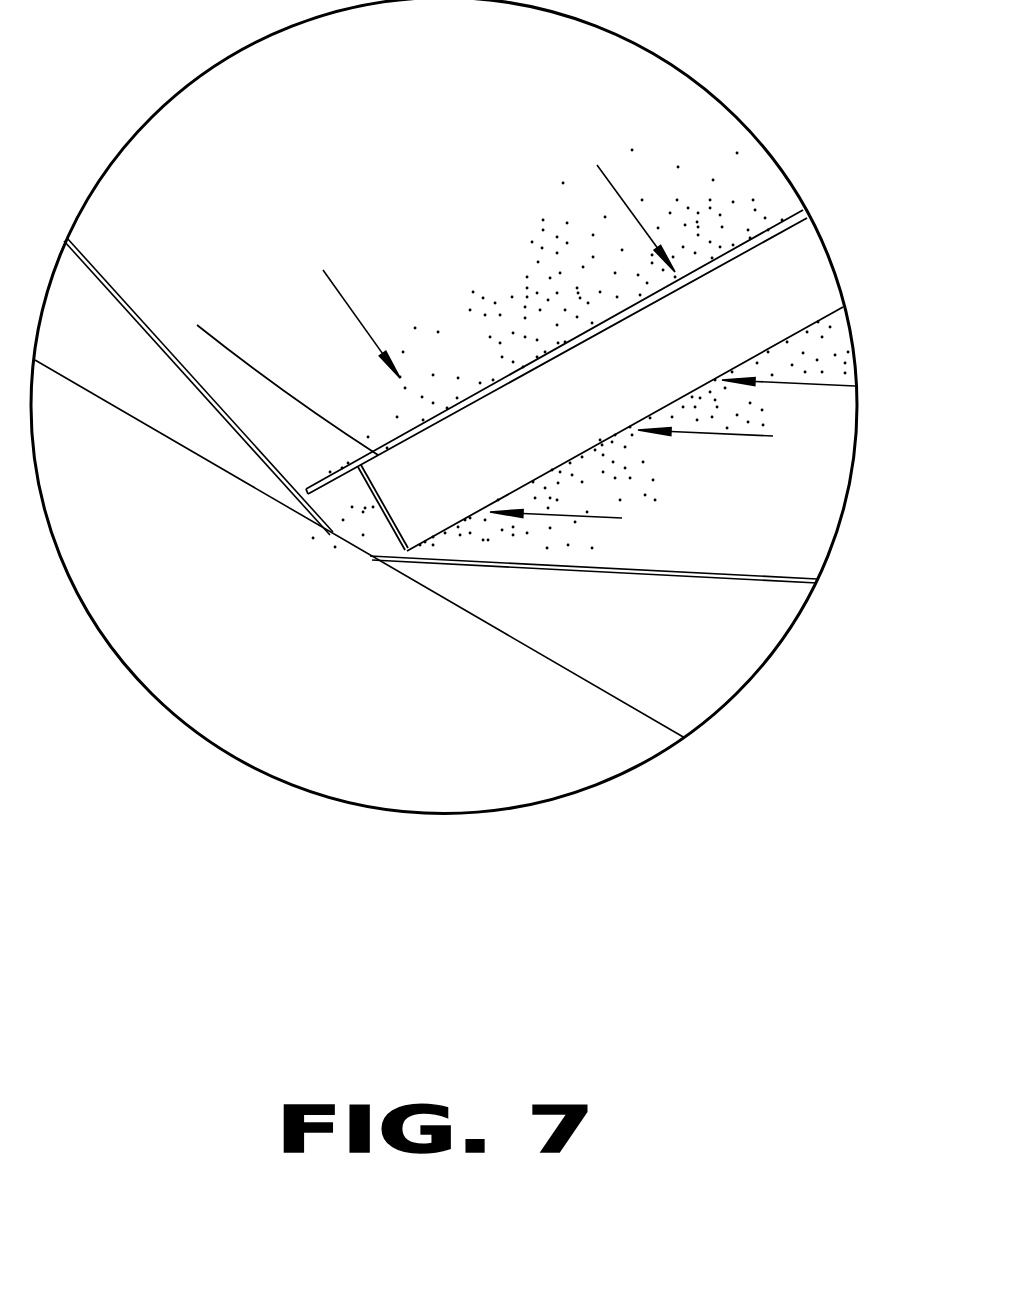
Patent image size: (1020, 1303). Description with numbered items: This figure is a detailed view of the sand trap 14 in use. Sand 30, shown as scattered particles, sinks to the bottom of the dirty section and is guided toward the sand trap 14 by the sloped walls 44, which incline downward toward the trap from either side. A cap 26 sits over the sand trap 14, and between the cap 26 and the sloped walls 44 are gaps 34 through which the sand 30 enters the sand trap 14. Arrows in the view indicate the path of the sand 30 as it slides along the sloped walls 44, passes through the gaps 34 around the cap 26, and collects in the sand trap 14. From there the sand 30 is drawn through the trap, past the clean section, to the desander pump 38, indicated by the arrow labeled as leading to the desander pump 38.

The sand trap 14 is at (810, 157).
The cap 26 is at (197, 325).
The sand 30 is at (525, 280).
The gaps 34 is at (233, 473).
The desander pump 38 is at (370, 515).
The sloped walls 44 is at (183, 370).